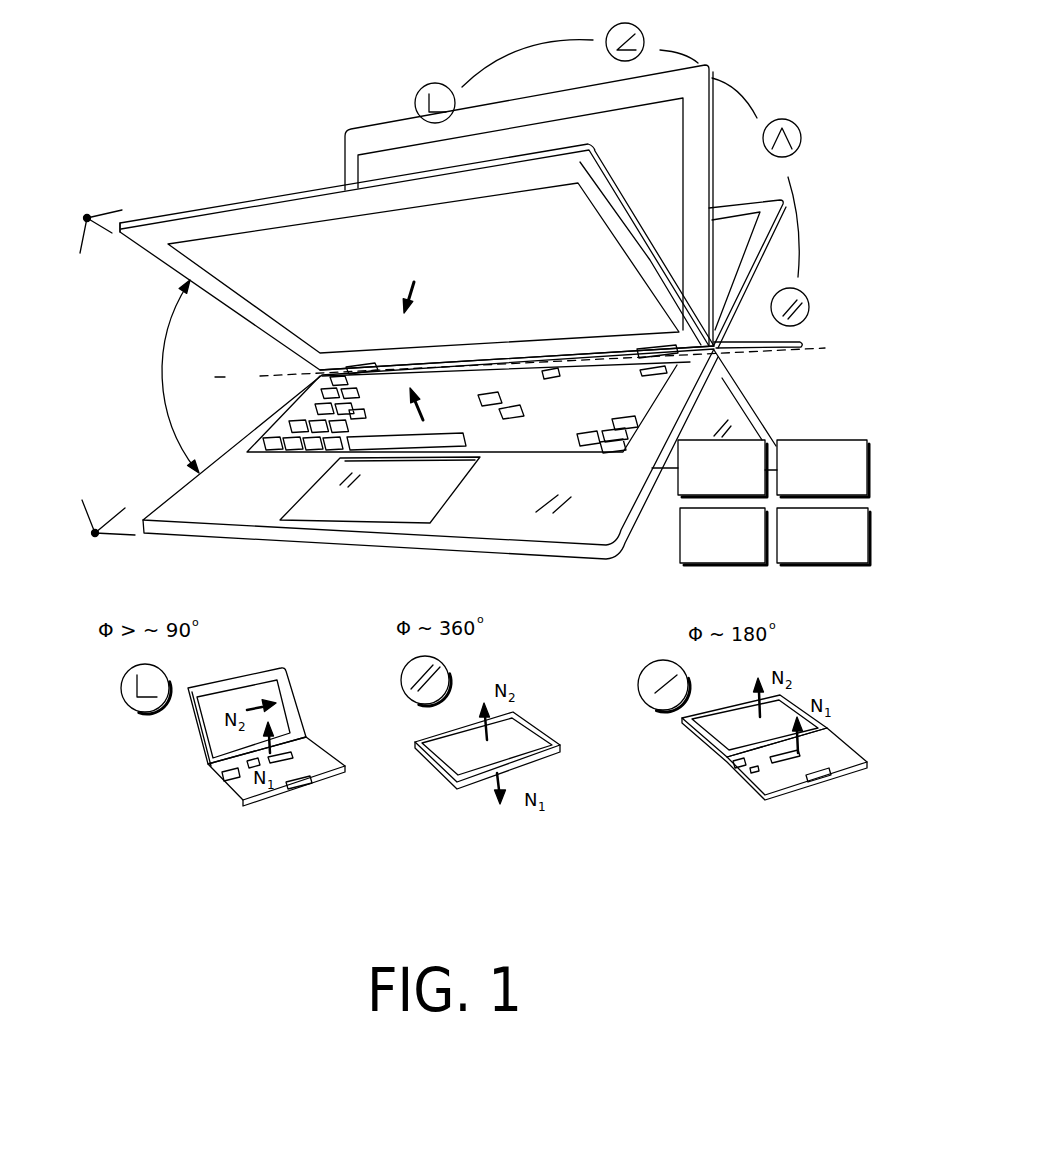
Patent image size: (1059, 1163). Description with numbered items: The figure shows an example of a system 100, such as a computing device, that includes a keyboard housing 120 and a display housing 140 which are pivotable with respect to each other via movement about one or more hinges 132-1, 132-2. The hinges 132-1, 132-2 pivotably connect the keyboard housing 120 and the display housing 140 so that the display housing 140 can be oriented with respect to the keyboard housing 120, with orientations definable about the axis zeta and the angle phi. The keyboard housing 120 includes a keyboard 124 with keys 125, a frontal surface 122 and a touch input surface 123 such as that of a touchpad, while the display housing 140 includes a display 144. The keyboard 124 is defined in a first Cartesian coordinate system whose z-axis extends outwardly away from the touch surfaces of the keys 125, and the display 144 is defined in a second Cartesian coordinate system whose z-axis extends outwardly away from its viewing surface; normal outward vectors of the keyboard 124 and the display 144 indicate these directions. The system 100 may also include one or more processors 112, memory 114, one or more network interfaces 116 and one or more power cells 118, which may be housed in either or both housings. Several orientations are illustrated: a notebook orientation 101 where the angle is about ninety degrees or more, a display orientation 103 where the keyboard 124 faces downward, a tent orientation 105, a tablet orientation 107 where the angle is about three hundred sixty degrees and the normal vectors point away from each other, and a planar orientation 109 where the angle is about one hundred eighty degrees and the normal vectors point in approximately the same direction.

The system 100 is at (275, 102).
The orientation 101 is at (421, 89).
The orientation 103 is at (611, 29).
The orientation 105 is at (796, 124).
The orientation 107 is at (804, 294).
The orientation 109 is at (645, 667).
The processors 112 is at (705, 487).
The memory 114 is at (806, 487).
The network interfaces 116 is at (706, 555).
The power cells 118 is at (806, 555).
The keyboard housing 120 is at (203, 541).
The frontal surface 122 is at (531, 498).
The touch input surface 123 is at (414, 498).
The keyboard 124 is at (597, 417).
The keys 125 is at (585, 440).
The hinge 132-1 is at (367, 364).
The hinge 132-2 is at (645, 347).
The display housing 140 is at (202, 211).
The display 144 is at (538, 270).